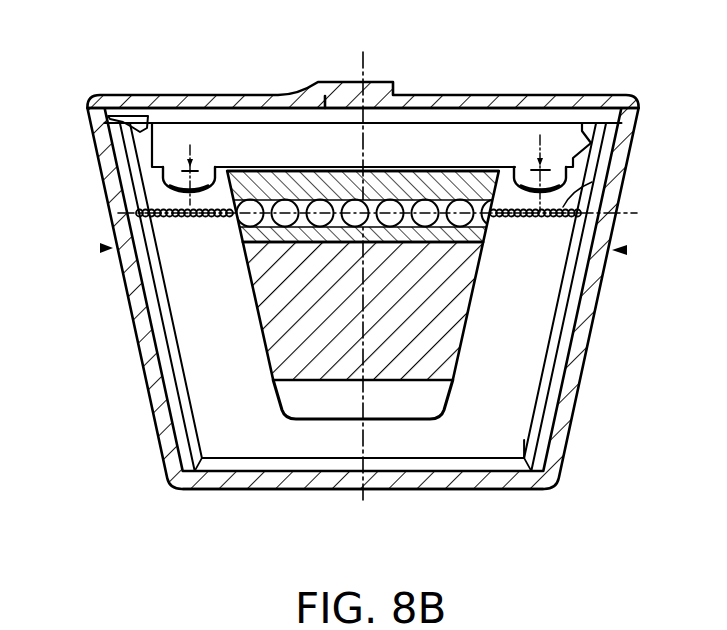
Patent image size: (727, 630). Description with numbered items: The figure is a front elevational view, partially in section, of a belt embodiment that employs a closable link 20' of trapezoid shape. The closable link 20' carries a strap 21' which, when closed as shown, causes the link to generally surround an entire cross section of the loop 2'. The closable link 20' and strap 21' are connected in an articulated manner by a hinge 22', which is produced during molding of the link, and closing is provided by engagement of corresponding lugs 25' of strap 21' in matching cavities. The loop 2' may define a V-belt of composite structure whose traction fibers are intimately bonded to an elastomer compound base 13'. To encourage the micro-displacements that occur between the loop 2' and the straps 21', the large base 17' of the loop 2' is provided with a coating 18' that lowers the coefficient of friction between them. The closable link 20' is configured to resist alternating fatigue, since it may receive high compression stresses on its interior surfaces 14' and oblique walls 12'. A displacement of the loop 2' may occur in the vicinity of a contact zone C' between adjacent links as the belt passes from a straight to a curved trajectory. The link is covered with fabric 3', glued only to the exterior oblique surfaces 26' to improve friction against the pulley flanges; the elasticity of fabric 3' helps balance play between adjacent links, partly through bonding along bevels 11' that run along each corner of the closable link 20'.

The loop 2' is at (356, 297).
The fabric 3' is at (362, 298).
The bevels 11' is at (363, 502).
The oblique walls 12' is at (363, 311).
The elastomer compound base 13' is at (313, 194).
The interior surfaces 14' is at (448, 398).
The large base 17' is at (363, 112).
The coating 18' is at (365, 148).
The closable link 20' is at (564, 349).
The strap 21' is at (362, 110).
The hinge 22' is at (86, 112).
The lugs 25' is at (402, 120).
The exterior oblique surfaces 26' is at (362, 240).
The contact zone C' is at (612, 184).